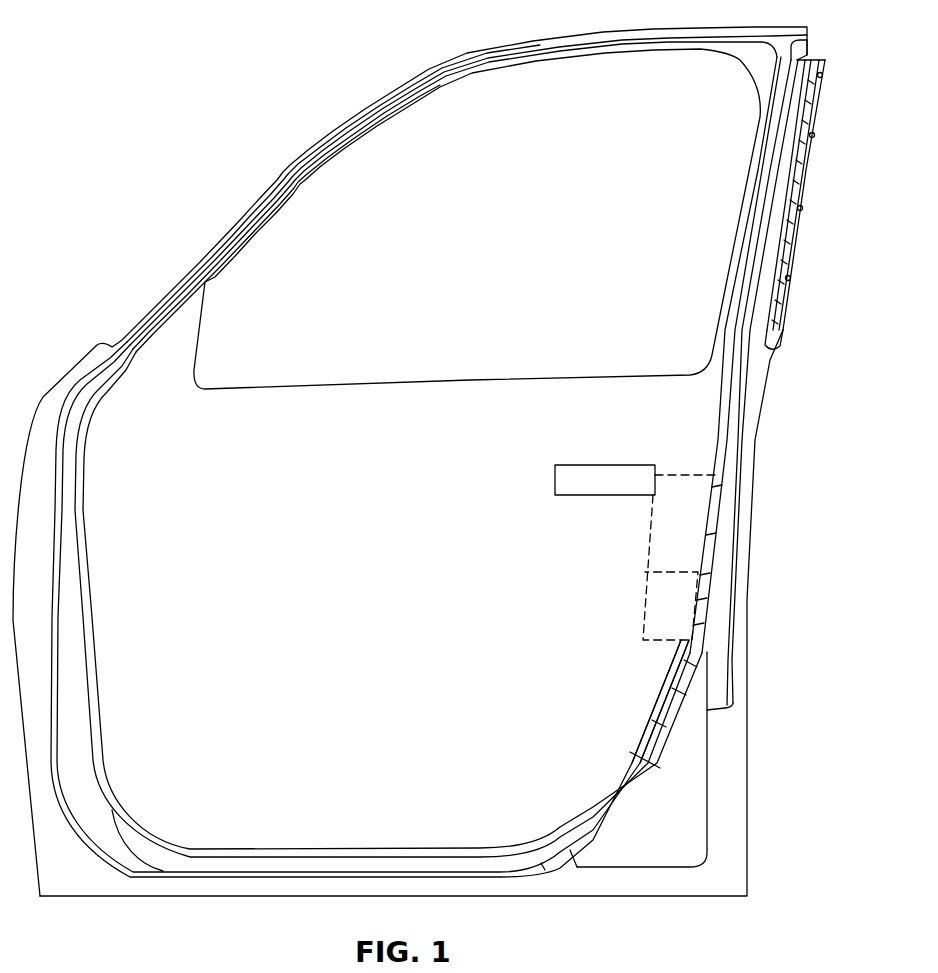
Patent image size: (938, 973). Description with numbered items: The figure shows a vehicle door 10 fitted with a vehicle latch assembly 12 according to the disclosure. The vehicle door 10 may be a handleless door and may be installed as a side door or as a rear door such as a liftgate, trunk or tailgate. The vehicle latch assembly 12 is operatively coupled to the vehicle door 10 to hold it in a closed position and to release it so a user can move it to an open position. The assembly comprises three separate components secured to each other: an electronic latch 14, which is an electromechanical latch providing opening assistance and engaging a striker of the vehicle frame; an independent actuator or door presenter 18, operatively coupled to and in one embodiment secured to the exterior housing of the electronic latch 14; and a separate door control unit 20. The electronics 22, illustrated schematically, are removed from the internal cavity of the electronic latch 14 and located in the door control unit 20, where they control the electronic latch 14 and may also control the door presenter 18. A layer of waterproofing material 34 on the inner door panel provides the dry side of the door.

The vehicle door 10 is at (805, 267).
The vehicle latch assembly 12 is at (777, 511).
The electronic latch 14 is at (745, 470).
The door presenter 18 is at (745, 577).
The door control unit 20 is at (590, 465).
The electronics 22 is at (672, 670).
The waterproofing material 34 is at (402, 565).